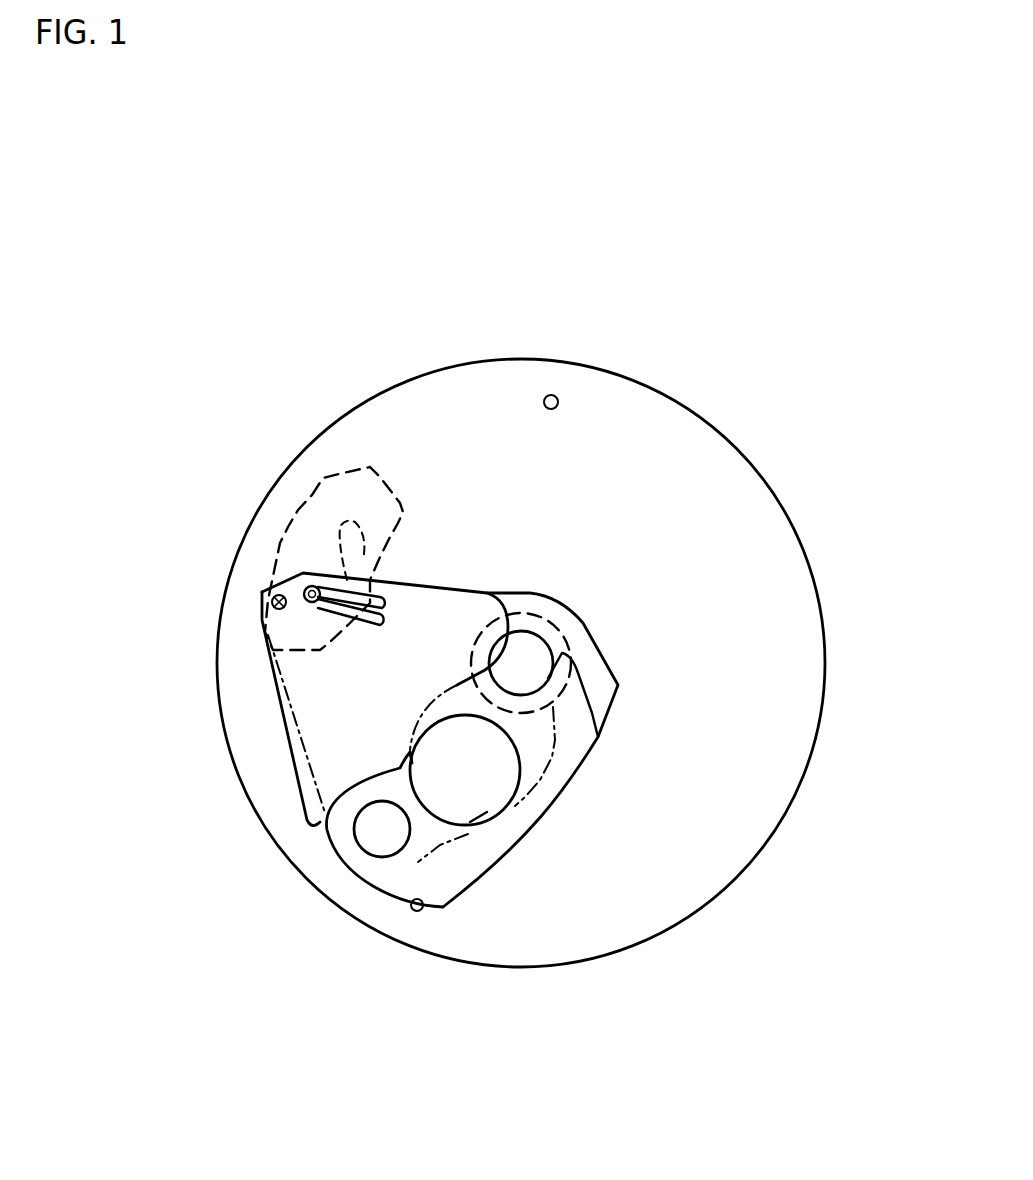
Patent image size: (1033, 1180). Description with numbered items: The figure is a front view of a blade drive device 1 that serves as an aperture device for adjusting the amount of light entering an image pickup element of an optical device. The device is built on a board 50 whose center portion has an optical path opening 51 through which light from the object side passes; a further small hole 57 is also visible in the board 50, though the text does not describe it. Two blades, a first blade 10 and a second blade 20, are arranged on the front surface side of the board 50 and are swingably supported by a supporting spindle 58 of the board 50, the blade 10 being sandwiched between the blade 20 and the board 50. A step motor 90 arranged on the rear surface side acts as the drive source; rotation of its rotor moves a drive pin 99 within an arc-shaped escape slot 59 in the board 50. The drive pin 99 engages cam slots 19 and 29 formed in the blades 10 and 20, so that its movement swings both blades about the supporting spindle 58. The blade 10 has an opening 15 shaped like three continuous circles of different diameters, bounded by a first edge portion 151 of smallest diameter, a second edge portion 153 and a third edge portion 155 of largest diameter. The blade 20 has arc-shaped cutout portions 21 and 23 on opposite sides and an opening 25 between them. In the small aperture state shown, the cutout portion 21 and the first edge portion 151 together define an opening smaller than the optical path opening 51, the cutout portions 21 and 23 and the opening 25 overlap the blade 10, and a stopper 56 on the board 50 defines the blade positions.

The blade drive device 1 is at (297, 273).
The blade 10 is at (610, 715).
The opening 15 is at (532, 740).
The first edge portion 151 is at (536, 646).
The second edge portion 153 is at (403, 817).
The third edge portion 155 is at (525, 780).
The cam slot 19 is at (377, 603).
The blade 20 is at (287, 732).
The cutout portion 21 is at (521, 697).
The cutout portion 23 is at (355, 830).
The opening 25 is at (465, 773).
The cam slot 29 is at (383, 615).
The board 50 is at (773, 490).
The optical path opening 51 is at (535, 627).
The stopper 56 is at (415, 910).
The hole 57 is at (552, 394).
The supporting spindle 58 is at (272, 600).
The escape slot 59 is at (340, 530).
The step motor 90 is at (327, 477).
The drive pin 99 is at (307, 588).